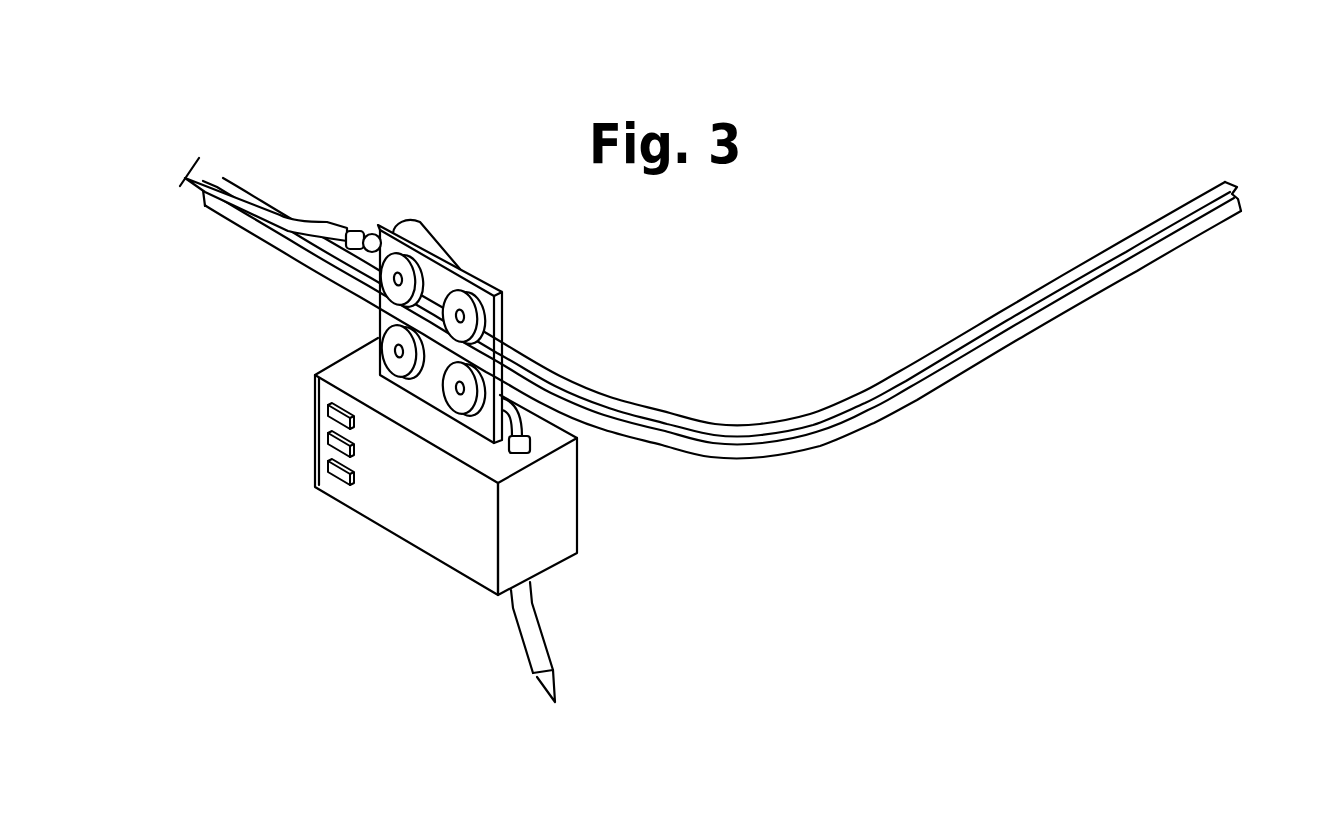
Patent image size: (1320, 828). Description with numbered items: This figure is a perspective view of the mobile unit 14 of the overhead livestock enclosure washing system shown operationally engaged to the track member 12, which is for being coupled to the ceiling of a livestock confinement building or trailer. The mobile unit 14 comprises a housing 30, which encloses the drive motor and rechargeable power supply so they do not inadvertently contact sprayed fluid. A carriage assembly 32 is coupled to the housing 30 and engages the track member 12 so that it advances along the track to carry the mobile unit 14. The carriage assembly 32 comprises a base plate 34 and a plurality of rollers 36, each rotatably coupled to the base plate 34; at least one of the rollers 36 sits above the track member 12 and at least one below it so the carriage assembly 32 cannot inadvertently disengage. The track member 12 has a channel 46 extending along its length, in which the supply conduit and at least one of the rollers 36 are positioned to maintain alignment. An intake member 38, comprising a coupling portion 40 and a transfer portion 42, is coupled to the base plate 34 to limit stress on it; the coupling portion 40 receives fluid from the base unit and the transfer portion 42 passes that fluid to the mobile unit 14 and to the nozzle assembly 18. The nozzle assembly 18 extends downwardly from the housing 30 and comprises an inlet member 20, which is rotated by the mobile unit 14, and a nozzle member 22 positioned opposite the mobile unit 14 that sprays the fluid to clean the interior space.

The track member 12 is at (1037, 327).
The mobile unit 14 is at (412, 585).
The nozzle assembly 18 is at (570, 626).
The inlet member 20 is at (517, 610).
The nozzle member 22 is at (540, 660).
The housing 30 is at (316, 376).
The carriage assembly 32 is at (516, 334).
The base plate 34 is at (500, 323).
The rollers 36 is at (397, 265).
The intake member 38 is at (417, 237).
The coupling portion 40 is at (372, 240).
The transfer portion 42 is at (503, 400).
The channel 46 is at (1127, 248).